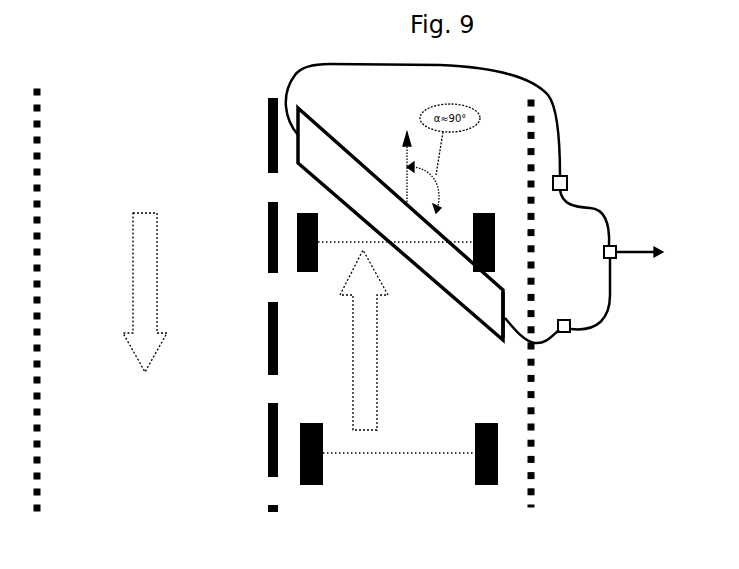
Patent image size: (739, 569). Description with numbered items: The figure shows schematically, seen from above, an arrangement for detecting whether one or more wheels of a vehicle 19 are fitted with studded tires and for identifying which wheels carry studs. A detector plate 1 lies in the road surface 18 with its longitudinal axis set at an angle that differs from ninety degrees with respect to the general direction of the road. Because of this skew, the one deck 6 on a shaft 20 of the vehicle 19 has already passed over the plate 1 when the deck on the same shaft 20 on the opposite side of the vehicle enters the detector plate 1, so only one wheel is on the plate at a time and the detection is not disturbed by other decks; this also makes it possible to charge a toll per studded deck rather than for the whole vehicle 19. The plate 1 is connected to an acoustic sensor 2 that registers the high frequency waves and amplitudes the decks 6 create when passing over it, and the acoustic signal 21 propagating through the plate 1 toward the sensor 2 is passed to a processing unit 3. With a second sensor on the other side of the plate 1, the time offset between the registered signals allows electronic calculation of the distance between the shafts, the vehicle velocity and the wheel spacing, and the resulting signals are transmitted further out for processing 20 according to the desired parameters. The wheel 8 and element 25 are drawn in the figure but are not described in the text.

The detector plate 1 is at (332, 133).
The sensor 2 is at (506, 315).
The processing unit 3 is at (566, 320).
The deck 6 is at (486, 213).
The front wheel 8 is at (306, 213).
The road surface 18 is at (567, 177).
The vehicle 19 is at (612, 246).
The shaft 20 is at (650, 250).
The acoustic signal 21 is at (407, 447).
The cable 25 is at (297, 138).